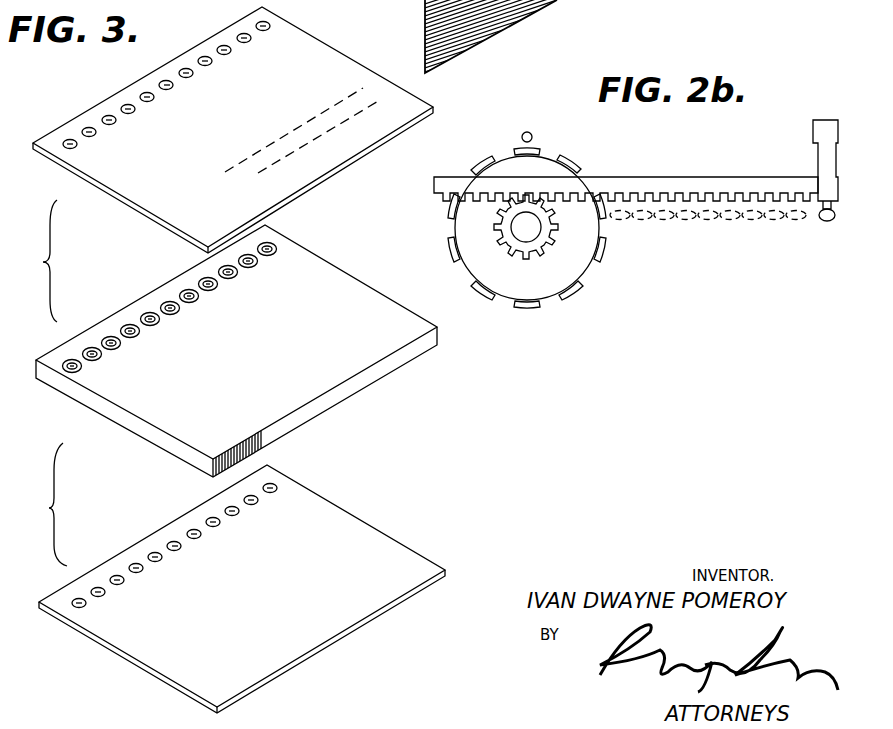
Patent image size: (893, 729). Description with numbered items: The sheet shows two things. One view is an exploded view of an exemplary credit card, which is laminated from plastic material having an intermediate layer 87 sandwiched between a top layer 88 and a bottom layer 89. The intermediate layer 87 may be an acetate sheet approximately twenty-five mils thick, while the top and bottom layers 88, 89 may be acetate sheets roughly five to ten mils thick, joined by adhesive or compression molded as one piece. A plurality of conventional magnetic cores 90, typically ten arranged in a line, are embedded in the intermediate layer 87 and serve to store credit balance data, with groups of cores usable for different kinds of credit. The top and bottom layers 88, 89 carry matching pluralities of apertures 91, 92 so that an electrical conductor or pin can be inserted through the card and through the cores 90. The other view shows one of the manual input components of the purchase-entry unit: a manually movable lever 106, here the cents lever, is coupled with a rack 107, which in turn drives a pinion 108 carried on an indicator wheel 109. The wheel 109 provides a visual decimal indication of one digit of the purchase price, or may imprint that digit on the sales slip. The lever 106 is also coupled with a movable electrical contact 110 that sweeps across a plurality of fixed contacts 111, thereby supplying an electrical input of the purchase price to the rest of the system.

In FIG. 3, the intermediate layer 87 is at (310, 272).
In FIG. 3, the top layer 88 is at (408, 106).
In FIG. 3, the bottom layer 89 is at (343, 522).
In FIG. 3, the magnetic cores 90 is at (180, 303).
In FIG. 3, the apertures 91 is at (122, 107).
In FIG. 3, the apertures 92 is at (163, 549).
In FIG. 2b, the lever 106 is at (818, 135).
In FIG. 2b, the rack 107 is at (600, 190).
In FIG. 2b, the pinion 108 is at (510, 243).
In FIG. 2b, the indicator wheel 109 is at (540, 277).
In FIG. 2b, the movable electrical contact 110 is at (826, 222).
In FIG. 2b, the fixed contacts 111 is at (753, 223).